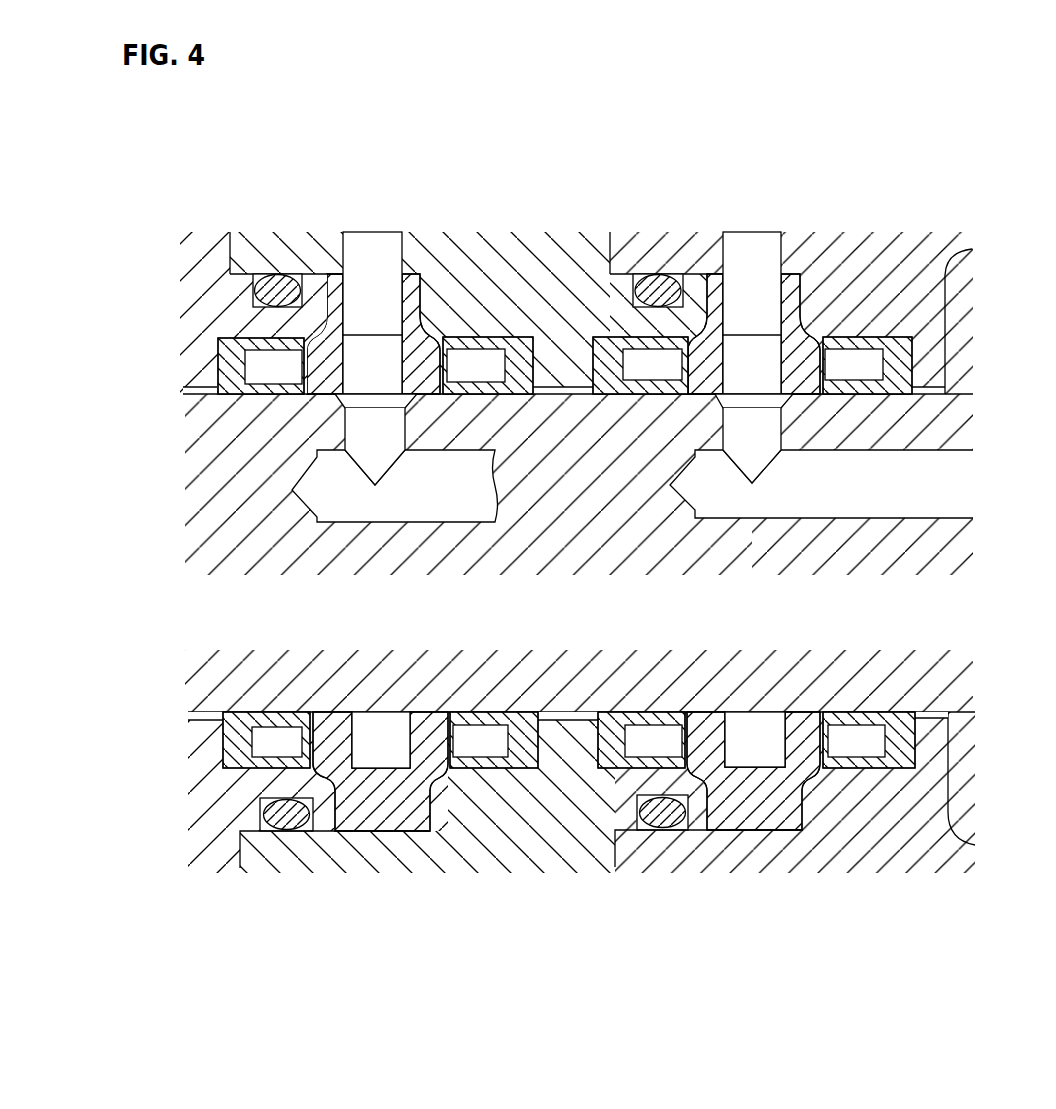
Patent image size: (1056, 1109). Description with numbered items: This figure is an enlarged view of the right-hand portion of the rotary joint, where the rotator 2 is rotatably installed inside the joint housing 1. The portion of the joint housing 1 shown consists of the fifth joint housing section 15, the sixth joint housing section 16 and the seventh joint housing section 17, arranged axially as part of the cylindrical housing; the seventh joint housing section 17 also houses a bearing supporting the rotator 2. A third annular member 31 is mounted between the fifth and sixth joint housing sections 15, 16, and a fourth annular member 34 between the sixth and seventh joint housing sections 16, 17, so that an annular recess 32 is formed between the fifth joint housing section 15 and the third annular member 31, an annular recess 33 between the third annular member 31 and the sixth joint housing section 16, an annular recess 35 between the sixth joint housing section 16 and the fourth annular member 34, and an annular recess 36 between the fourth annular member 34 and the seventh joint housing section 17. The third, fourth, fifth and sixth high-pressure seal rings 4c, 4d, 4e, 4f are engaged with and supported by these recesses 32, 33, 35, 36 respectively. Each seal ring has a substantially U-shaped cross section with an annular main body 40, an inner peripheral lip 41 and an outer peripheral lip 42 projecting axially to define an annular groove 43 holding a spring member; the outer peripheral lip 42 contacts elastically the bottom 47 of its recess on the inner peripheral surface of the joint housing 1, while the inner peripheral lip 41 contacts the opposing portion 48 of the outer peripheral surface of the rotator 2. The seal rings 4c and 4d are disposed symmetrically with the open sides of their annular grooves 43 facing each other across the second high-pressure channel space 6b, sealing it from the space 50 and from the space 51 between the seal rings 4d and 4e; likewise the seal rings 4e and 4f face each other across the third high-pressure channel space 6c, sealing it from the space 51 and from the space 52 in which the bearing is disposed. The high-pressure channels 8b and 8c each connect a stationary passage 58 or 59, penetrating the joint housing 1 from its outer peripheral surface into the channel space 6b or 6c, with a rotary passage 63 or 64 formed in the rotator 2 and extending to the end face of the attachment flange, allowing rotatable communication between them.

The joint housing 1 is at (412, 864).
The rotator 2 is at (200, 533).
The third high-pressure seal ring 4c is at (215, 387).
The fourth high-pressure seal ring 4d is at (520, 340).
The fifth high-pressure seal ring 4e is at (638, 396).
The sixth high-pressure seal ring 4f is at (913, 358).
The second high-pressure channel space 6b is at (378, 718).
The third high-pressure channel space 6c is at (755, 718).
The high-pressure channel 8b is at (374, 501).
The high-pressure channel 8c is at (829, 486).
The fifth joint housing section 15 is at (210, 252).
The sixth joint housing section 16 is at (258, 250).
The seventh joint housing section 17 is at (826, 242).
The third annular member 31 is at (375, 822).
The annular recess 32 is at (225, 357).
The annular recess 33 is at (472, 357).
The fourth annular member 34 is at (757, 822).
The annular recess 35 is at (607, 338).
The annular recess 36 is at (850, 352).
The annular main body 40 is at (223, 770).
The inner peripheral lip 41 is at (260, 733).
The outer peripheral lip 42 is at (313, 812).
The annular groove 43 is at (335, 716).
The bottom of annular recess 47 is at (260, 837).
The opposing portion of rotator surface 48 is at (287, 728).
The space 50 is at (227, 715).
The space 51 is at (567, 396).
The space 52 is at (958, 710).
The stationary passage 58 is at (345, 253).
The stationary passage 59 is at (727, 253).
The rotary passage 63 is at (448, 505).
The rotary passage 64 is at (928, 498).